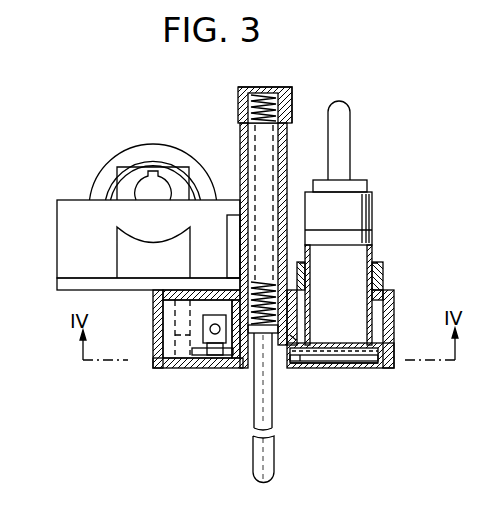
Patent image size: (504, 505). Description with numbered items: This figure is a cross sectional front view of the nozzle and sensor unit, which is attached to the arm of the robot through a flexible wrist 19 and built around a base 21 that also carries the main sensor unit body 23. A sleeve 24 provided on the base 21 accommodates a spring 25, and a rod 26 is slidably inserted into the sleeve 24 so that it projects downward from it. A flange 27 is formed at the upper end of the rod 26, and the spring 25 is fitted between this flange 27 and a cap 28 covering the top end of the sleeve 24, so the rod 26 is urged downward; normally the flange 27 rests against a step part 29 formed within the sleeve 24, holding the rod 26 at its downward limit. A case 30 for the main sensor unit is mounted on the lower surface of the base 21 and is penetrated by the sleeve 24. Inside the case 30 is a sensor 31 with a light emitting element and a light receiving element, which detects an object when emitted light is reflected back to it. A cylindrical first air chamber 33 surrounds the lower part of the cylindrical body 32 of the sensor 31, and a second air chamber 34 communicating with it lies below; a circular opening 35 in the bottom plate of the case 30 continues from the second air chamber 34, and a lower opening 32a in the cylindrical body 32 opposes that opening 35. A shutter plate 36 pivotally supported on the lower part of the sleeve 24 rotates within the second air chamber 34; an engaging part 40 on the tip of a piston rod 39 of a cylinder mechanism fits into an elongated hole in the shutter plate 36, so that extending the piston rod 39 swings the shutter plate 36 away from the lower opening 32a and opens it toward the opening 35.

The flexible wrist 19 is at (138, 138).
The base 21 is at (65, 287).
The main sensor unit body 23 is at (389, 266).
The sleeve 24 is at (288, 166).
The spring 25 is at (257, 106).
The rod 26 is at (275, 420).
The flange 27 is at (254, 376).
The cap 28 is at (270, 87).
The step part 29 is at (284, 337).
The case 30 is at (153, 332).
The sensor 31 is at (374, 212).
The cylindrical body 32 is at (385, 276).
The lower opening 32a is at (330, 345).
The first air chamber 33 is at (374, 310).
The second air chamber 34 is at (392, 357).
The circular opening 35 is at (340, 362).
The shutter plate 36 is at (355, 352).
The piston rod 39 is at (203, 322).
The engaging part 40 is at (215, 357).